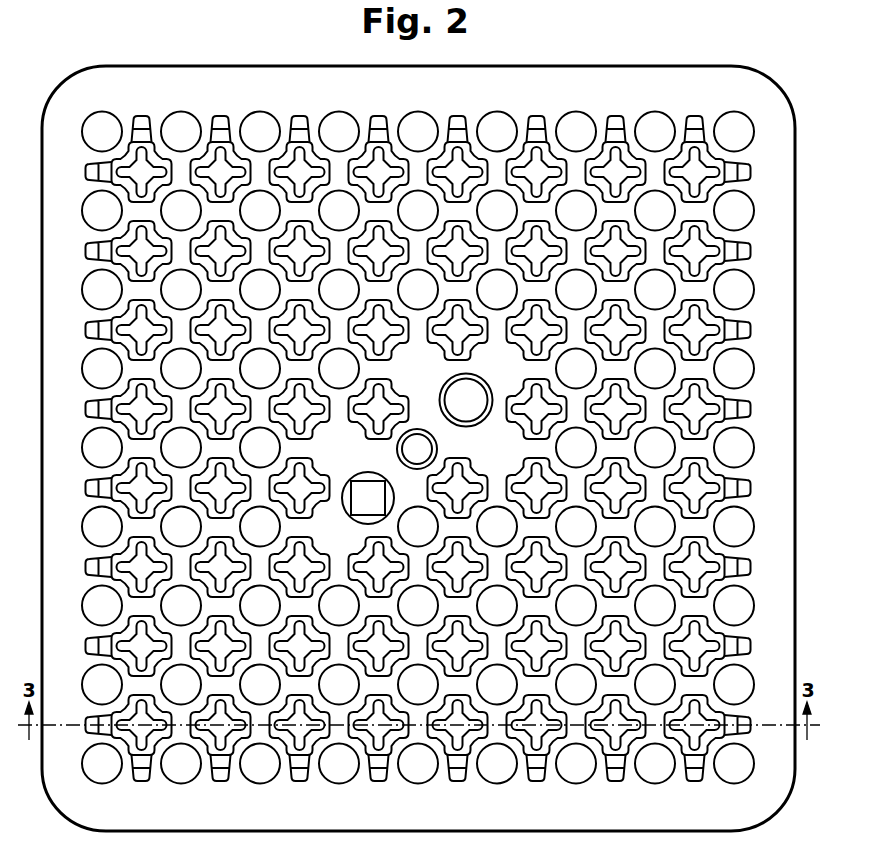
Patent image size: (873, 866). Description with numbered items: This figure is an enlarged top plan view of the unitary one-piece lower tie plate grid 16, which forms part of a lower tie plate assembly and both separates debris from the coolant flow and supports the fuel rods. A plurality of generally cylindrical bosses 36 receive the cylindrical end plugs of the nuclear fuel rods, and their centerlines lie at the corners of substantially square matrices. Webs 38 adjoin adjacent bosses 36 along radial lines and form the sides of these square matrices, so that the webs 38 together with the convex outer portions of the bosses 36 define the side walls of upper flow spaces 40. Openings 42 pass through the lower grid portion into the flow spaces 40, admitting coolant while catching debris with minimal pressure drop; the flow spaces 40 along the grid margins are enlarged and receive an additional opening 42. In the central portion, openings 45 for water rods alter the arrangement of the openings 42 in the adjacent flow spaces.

The lower tie plate grid 16 is at (796, 355).
The cylindrical bosses 36 is at (670, 273).
The webs 38 is at (657, 487).
The upper flow spaces 40 is at (613, 650).
The openings 42 is at (690, 538).
The openings for water rods 45 is at (467, 400).